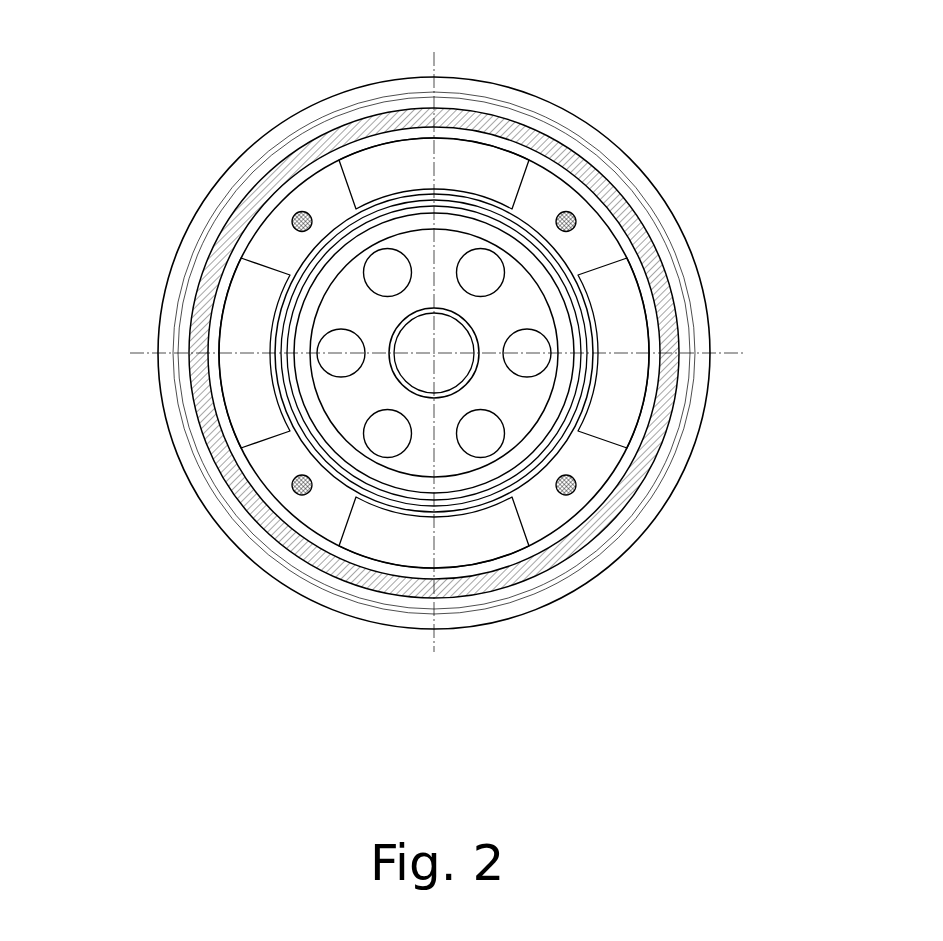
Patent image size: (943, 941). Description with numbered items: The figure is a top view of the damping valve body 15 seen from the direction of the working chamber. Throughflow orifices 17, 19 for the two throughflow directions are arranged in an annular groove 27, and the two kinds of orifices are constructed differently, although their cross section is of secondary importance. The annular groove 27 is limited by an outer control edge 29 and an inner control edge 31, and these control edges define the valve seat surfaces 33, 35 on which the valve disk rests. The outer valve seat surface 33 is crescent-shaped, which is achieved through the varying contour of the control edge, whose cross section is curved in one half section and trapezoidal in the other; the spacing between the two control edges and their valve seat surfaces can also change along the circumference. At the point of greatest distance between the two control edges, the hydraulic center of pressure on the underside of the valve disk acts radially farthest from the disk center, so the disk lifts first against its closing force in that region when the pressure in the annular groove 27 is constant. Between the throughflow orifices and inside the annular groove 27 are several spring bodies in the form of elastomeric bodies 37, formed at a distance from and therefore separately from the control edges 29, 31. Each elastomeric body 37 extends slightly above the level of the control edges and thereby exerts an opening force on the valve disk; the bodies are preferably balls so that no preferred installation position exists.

The damping valve body 15 is at (172, 573).
The throughflow orifice 17 is at (615, 292).
The throughflow orifice 19 is at (528, 362).
The annular groove 27 is at (268, 463).
The outer control edge 29 is at (330, 560).
The inner control edge 31 is at (338, 233).
The outer valve seat surface 33 is at (412, 593).
The inner valve seat surface 35 is at (472, 497).
The elastomeric body 37 is at (292, 487).